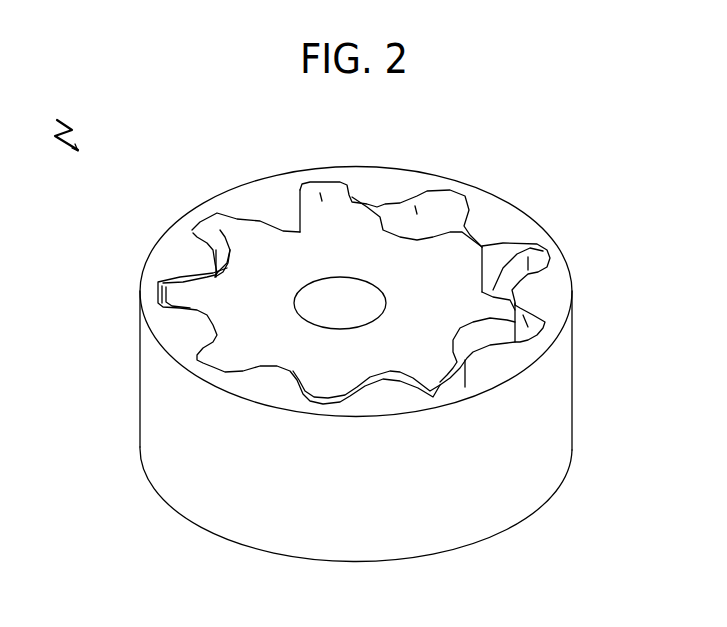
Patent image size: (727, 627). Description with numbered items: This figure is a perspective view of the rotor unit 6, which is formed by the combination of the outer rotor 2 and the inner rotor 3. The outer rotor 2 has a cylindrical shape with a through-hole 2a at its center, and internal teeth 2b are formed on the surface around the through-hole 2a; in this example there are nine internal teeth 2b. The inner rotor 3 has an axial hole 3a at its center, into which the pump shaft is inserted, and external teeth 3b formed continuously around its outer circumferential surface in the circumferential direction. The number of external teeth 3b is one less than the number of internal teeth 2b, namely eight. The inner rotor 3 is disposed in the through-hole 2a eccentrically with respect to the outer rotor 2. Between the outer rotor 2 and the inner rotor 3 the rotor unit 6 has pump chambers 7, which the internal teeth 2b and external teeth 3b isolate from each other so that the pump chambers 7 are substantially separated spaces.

The outer rotor 2 is at (547, 410).
The through-hole 2a is at (518, 302).
The internal teeth 2b is at (384, 199).
The inner rotor 3 is at (405, 283).
The axial hole 3a is at (327, 307).
The external teeth 3b is at (480, 244).
The rotor unit 6 is at (66, 117).
The pump chambers 7 is at (320, 197).